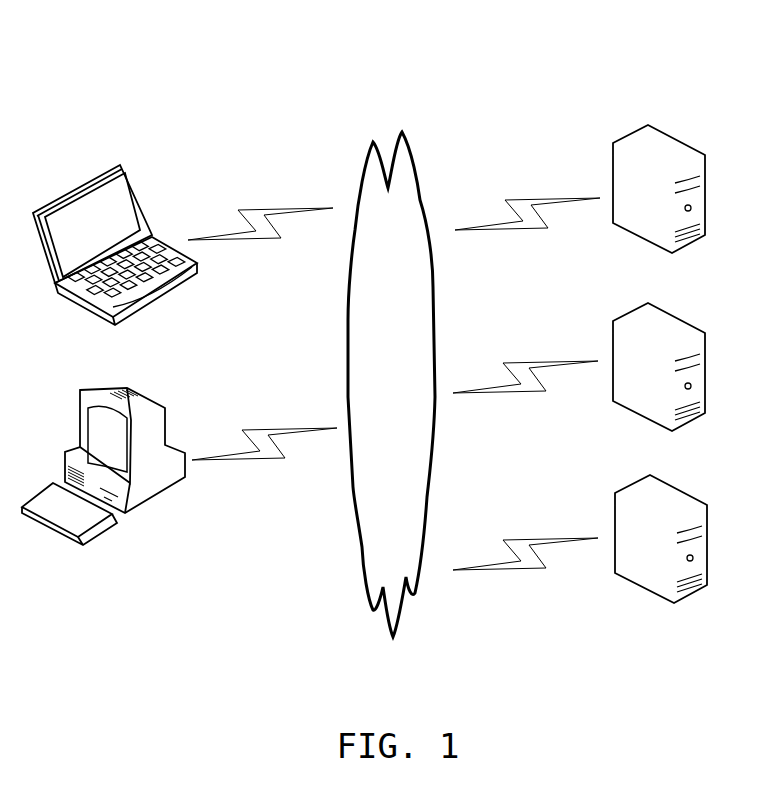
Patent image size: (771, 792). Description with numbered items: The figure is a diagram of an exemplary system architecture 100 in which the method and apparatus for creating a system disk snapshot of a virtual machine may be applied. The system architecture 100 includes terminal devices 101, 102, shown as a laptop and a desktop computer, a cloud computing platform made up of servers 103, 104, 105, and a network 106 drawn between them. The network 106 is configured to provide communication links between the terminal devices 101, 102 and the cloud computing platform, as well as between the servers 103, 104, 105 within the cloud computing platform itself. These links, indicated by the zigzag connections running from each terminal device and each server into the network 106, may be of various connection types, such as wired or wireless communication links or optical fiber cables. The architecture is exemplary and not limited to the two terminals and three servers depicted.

The system architecture 100 is at (570, 40).
The terminal device 101 is at (115, 264).
The terminal device 102 is at (103, 483).
The server 103 is at (659, 208).
The server 104 is at (659, 385).
The server 105 is at (661, 565).
The network 106 is at (391, 384).